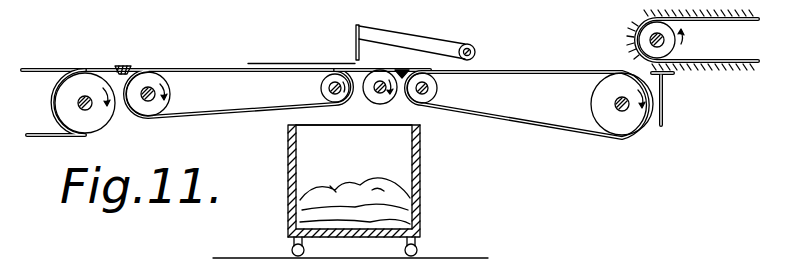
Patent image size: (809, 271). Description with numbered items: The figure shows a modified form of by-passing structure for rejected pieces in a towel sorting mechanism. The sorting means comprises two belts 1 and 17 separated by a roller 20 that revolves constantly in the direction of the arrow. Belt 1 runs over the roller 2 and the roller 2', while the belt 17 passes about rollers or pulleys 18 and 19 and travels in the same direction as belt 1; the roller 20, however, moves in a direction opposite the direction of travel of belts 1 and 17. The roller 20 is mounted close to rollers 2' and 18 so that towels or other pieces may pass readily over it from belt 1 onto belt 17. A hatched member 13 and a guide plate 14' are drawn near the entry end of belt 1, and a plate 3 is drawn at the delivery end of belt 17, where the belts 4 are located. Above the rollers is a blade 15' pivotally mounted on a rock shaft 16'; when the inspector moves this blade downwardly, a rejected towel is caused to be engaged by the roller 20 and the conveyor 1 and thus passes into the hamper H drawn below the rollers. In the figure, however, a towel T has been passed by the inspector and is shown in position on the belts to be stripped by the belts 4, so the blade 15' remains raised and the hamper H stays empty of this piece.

The belt 1 is at (240, 112).
The roller 2 is at (156, 74).
The roller 2' is at (335, 57).
The deflector plate 3 is at (664, 97).
The belts 4 is at (719, 60).
The stripper wedge 13 is at (120, 66).
The guide plate 14' is at (66, 121).
The blade 15' is at (410, 34).
The rock shaft 16' is at (486, 47).
The belt 17 is at (538, 128).
The roller 18 is at (434, 92).
The roller 19 is at (631, 128).
The roller 20 is at (377, 95).
The towel T is at (275, 62).
The hamper H is at (421, 160).